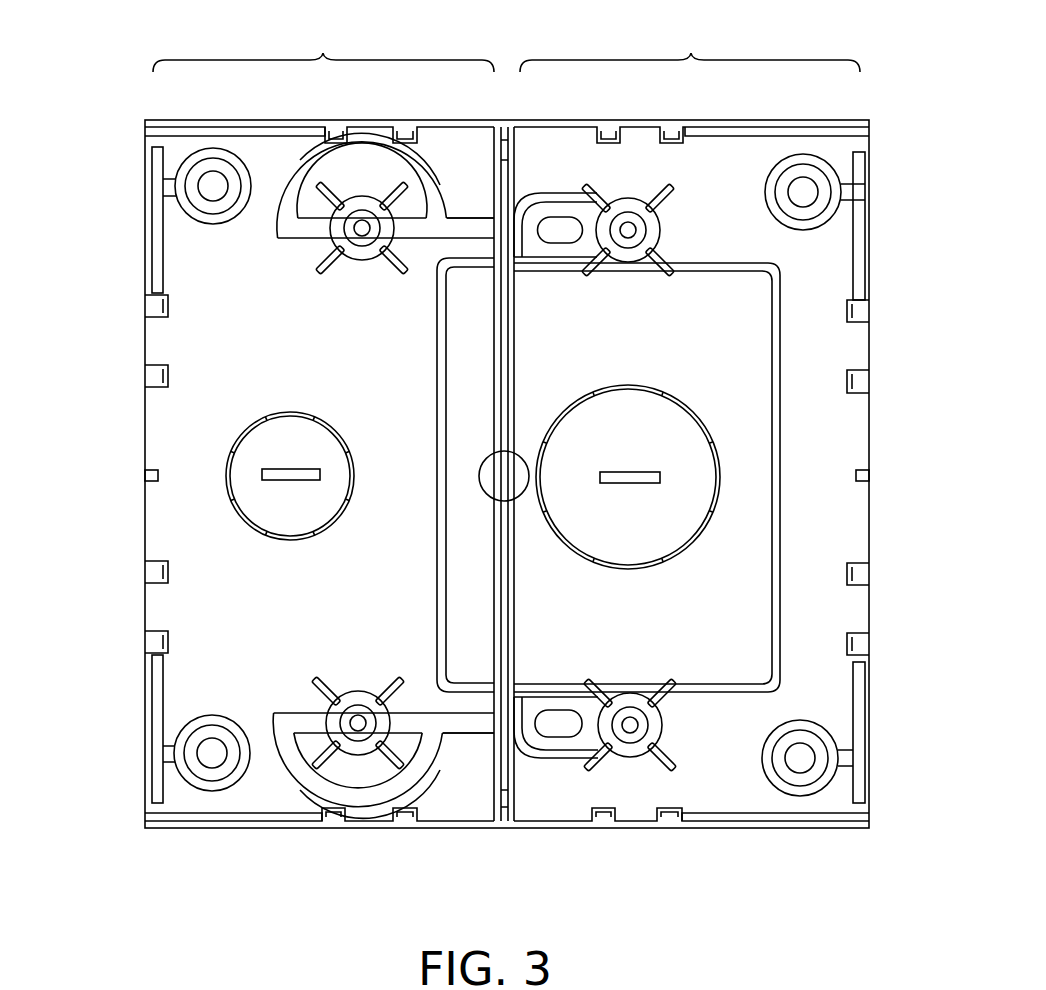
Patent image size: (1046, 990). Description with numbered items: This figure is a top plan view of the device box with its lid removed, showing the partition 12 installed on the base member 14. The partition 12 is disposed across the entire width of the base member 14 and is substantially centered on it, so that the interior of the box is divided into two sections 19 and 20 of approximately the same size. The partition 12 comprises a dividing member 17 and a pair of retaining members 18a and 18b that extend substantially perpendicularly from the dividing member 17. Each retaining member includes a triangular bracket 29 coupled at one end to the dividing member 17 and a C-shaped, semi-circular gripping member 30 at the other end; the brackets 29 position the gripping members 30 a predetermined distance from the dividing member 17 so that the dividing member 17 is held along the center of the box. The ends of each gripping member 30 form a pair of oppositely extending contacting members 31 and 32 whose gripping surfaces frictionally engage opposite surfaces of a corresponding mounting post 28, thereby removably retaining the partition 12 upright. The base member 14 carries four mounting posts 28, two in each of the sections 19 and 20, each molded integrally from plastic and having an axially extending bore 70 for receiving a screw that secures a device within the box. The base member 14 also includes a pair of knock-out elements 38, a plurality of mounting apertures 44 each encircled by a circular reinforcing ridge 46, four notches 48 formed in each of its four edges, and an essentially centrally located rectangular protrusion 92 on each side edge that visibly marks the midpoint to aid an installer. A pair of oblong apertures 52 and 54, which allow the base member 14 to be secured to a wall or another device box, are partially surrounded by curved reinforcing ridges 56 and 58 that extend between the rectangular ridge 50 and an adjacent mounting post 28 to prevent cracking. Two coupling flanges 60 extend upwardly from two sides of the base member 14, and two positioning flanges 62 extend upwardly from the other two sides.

The partition 12 is at (512, 355).
The base member 14 is at (870, 420).
The dividing member 17 is at (494, 612).
The retaining member 18a is at (430, 170).
The retaining member 18b is at (421, 795).
The section 19 is at (323, 42).
The section 20 is at (690, 42).
The mounting post 28 is at (340, 262).
The triangular bracket 29 is at (470, 218).
The C-shaped gripping member 30 is at (288, 213).
The contacting member 31 is at (300, 240).
The contacting member 32 is at (288, 712).
The knock-out element 38 is at (290, 541).
The mounting aperture 44 is at (214, 185).
The circular reinforcing ridge 46 is at (176, 217).
The notch 48 is at (338, 126).
The rectangular ridge 50 is at (437, 460).
The oblong aperture 52 is at (566, 244).
The oblong aperture 54 is at (556, 709).
The curved reinforcing ridge 56 is at (552, 193).
The curved reinforcing ridge 58 is at (555, 760).
The coupling flange 60 is at (157, 178).
The positioning flange 62 is at (146, 123).
The axially extending bore 70 is at (362, 238).
The rectangular protrusion 92 is at (145, 475).